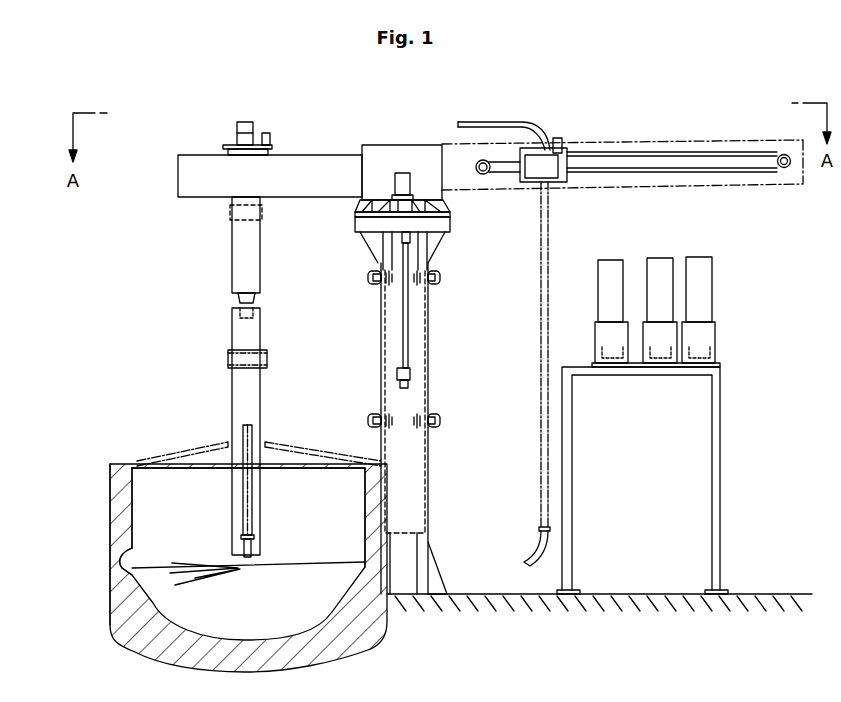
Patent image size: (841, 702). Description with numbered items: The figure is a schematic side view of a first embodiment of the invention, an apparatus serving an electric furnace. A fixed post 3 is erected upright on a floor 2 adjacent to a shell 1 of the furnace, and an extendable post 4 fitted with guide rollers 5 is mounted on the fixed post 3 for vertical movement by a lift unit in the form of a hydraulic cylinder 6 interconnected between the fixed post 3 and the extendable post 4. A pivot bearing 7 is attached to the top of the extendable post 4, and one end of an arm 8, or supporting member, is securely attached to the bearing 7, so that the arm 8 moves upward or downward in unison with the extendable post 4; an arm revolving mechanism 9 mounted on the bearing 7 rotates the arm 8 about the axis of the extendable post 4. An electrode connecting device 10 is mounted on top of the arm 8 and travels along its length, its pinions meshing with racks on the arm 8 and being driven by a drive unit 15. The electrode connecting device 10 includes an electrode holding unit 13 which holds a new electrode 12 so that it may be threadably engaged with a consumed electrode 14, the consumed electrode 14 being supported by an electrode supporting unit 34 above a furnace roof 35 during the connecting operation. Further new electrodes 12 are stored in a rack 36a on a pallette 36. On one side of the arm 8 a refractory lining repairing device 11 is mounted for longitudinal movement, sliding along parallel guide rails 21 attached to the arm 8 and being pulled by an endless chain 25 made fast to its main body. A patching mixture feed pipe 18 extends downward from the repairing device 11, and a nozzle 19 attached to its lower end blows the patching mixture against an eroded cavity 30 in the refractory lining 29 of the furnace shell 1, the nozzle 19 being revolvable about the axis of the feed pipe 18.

The shell 1 is at (100, 593).
The floor 2 is at (463, 602).
The fixed post 3 is at (430, 330).
The extendable post 4 is at (375, 250).
The guide rollers 5 is at (440, 277).
The hydraulic cylinder 6 is at (400, 320).
The pivot bearing 7 is at (448, 213).
The arm 8 is at (292, 185).
The arm revolving mechanism 9 is at (400, 173).
The electrode connecting device 10 is at (272, 145).
The refractory lining repairing device 11 is at (547, 160).
The new electrode 12 is at (232, 263).
The electrode holding unit 13 is at (230, 216).
The consumed electrode 14 is at (232, 322).
The drive unit 15 is at (262, 133).
The patching mixture feed pipe 18 is at (549, 208).
The nozzle 19 is at (230, 572).
The guide rails 21 is at (623, 152).
The endless chain 25 is at (500, 160).
The refractory lining 29 is at (110, 500).
The eroded cavity 30 is at (120, 563).
The electrode supporting unit 34 is at (228, 359).
The furnace roof 35 is at (290, 442).
The pallette 36 is at (720, 425).
The rack 36a is at (716, 345).